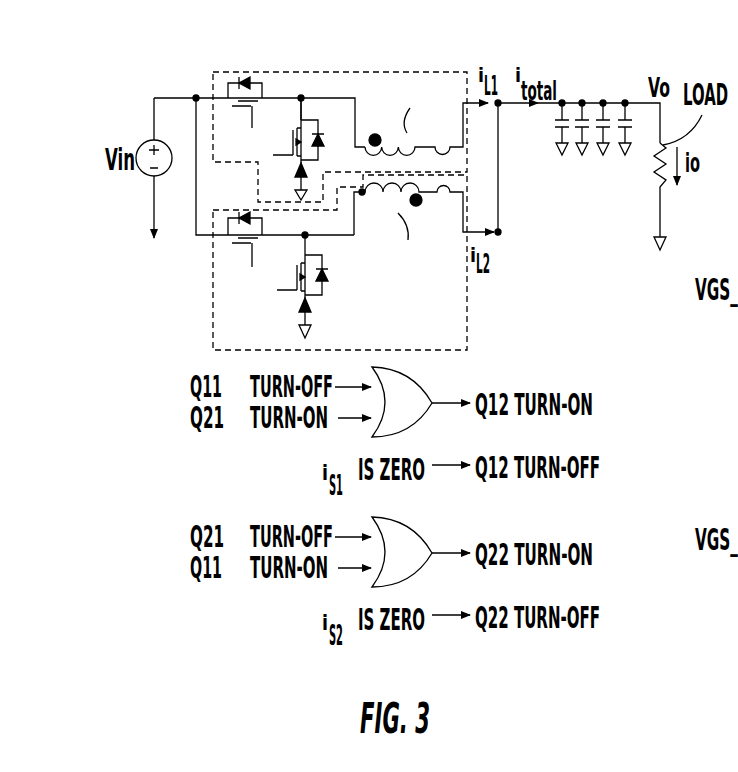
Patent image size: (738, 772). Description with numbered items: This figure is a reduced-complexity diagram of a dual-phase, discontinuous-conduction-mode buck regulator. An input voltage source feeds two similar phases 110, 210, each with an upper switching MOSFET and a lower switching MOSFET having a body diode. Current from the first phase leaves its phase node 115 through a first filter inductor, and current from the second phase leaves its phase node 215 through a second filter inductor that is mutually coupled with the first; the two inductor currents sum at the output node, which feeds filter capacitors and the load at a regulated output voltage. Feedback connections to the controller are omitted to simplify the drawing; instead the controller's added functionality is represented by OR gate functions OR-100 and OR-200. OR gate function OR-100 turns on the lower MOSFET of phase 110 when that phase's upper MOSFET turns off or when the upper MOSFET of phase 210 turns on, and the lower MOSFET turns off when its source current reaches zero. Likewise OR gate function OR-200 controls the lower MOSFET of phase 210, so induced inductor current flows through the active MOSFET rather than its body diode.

The first phase 110 is at (343, 72).
The phase node 115 is at (301, 98).
The second phase 210 is at (466, 332).
The phase node 215 is at (312, 222).
The OR gate function OR- 100 is at (410, 378).
The OR gate function OR- 200 is at (410, 528).